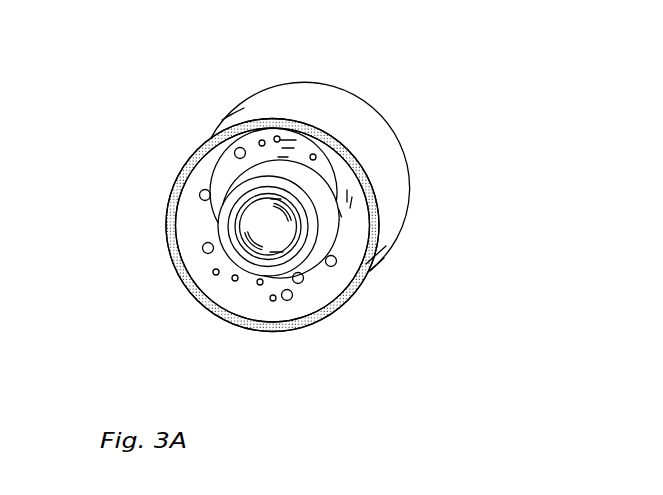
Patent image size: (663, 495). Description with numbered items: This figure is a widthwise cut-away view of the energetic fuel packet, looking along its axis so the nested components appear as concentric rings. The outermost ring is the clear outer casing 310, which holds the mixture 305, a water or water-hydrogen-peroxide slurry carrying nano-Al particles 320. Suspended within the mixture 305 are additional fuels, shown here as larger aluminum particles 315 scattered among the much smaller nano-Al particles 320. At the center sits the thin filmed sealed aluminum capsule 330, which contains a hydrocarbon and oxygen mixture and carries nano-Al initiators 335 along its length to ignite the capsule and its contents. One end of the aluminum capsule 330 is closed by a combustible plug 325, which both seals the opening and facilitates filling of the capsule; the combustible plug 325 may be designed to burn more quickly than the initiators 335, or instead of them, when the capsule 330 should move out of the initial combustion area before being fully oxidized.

The mixture 305 is at (327, 285).
The clear outer casing 310 is at (215, 129).
The larger aluminum particles 315 is at (200, 192).
The nano-Al particles 320 is at (261, 141).
The combustible plug 325 is at (253, 226).
The thin filmed sealed aluminum capsule 330 is at (325, 175).
The nano-Al initiators 335 is at (340, 213).